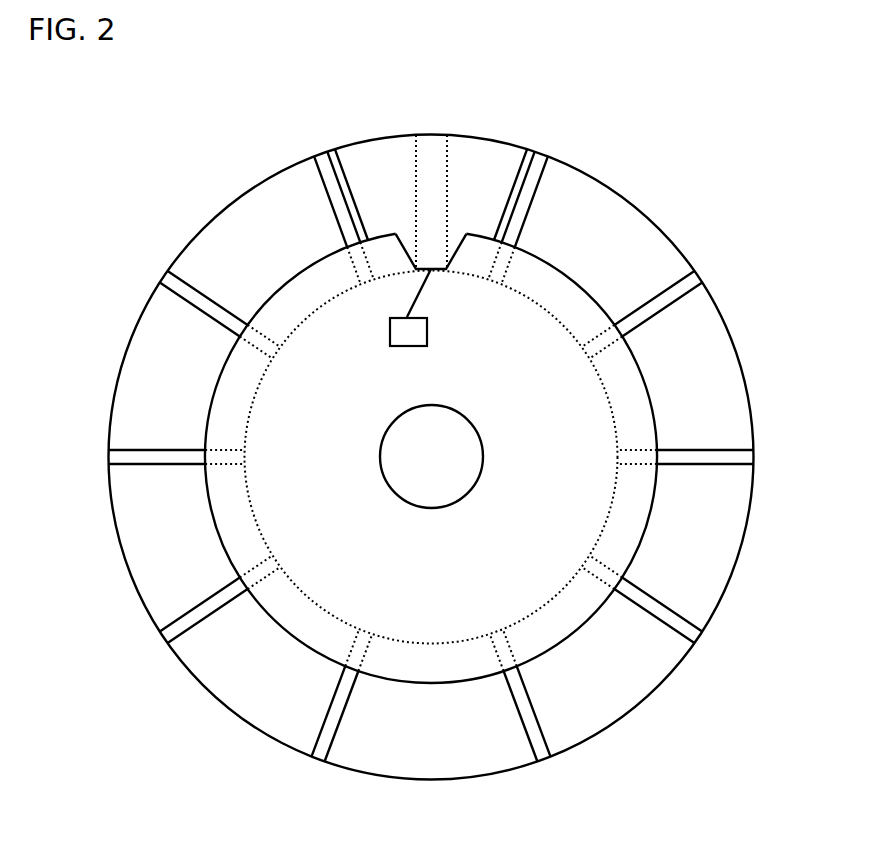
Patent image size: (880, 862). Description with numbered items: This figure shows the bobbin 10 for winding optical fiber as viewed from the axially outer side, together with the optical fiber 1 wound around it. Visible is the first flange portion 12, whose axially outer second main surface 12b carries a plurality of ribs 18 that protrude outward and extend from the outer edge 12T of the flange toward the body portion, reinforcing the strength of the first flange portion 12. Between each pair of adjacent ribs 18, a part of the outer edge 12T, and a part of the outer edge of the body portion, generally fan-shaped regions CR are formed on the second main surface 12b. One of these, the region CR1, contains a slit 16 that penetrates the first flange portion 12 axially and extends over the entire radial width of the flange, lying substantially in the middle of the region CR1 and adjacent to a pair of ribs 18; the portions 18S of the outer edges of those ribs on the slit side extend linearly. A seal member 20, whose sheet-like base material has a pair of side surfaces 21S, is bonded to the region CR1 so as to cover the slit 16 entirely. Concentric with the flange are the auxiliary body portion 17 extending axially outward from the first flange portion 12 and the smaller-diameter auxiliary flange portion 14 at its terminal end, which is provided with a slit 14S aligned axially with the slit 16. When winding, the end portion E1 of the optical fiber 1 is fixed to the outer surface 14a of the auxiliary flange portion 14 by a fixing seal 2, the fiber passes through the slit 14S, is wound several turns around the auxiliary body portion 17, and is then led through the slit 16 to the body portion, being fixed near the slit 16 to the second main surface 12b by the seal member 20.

The bobbin 10 is at (165, 113).
The first flange portion 12 is at (744, 581).
The outer edge 12T is at (218, 702).
The second main surface 12b is at (707, 515).
The auxiliary flange portion 14 is at (712, 380).
The slit 14S is at (404, 226).
The outer surface 14a is at (434, 613).
The slit 16 is at (426, 145).
The auxiliary body portion 17 is at (248, 402).
The ribs 18 is at (322, 170).
The portions 18S is at (355, 218).
The seal member 20 is at (460, 157).
The side surfaces 21S is at (340, 153).
The optical fiber 1 is at (428, 314).
The fixing seal 2 is at (390, 330).
The end portion E1 is at (405, 317).
The regions CR is at (595, 683).
The region CR1 is at (487, 157).